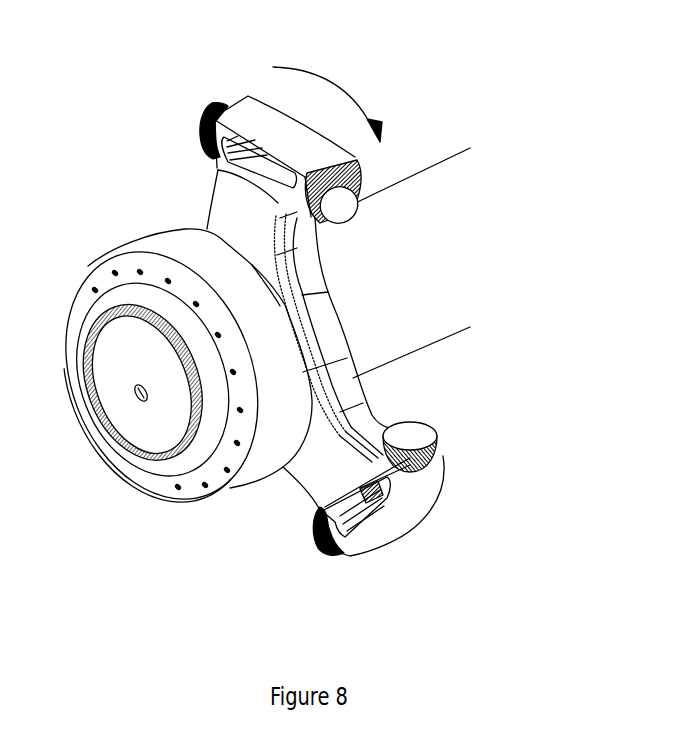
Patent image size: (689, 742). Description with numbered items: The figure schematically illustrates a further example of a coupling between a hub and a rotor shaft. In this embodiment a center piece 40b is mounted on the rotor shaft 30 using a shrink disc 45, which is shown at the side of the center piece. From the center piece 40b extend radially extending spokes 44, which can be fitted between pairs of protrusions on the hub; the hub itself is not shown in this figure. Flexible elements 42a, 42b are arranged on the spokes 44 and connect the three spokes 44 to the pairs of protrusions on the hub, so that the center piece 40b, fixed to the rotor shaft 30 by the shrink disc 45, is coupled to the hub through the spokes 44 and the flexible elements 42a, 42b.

The rotor shaft 30 is at (453, 180).
The center piece 40b is at (448, 517).
The flexible element 42a is at (345, 210).
The flexible element 42b is at (203, 143).
The spoke 44 is at (246, 212).
The shrink disc 45 is at (260, 463).